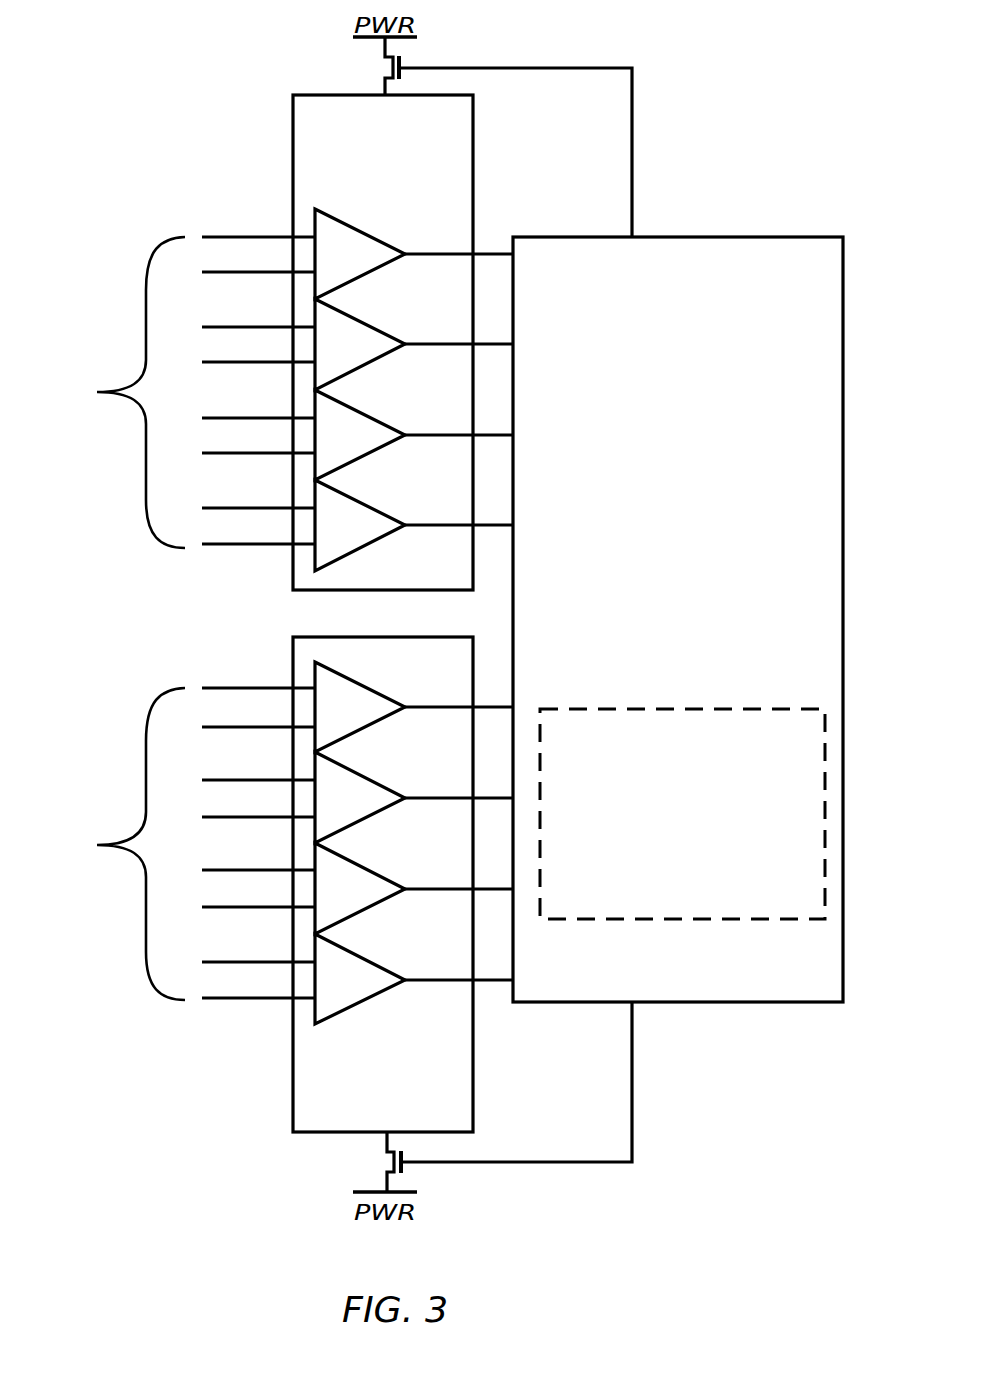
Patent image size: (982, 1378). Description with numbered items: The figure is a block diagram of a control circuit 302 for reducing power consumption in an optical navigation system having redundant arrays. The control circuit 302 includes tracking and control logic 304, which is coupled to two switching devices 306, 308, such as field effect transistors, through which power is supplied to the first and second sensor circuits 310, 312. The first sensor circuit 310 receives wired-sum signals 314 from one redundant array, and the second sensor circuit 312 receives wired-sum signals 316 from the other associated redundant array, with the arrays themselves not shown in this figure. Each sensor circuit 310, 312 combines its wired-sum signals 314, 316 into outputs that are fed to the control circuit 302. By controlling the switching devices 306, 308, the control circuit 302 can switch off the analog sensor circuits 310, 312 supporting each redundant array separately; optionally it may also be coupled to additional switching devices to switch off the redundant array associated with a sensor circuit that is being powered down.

The control circuit 302 is at (797, 285).
The tracking and control logic 304 is at (797, 748).
The switching device 306 is at (378, 1164).
The switching device 308 is at (366, 67).
The sensor circuit 310 is at (463, 583).
The sensor circuit 312 is at (465, 670).
The wired-sum signals 314 is at (97, 392).
The wired-sum signals 316 is at (97, 845).